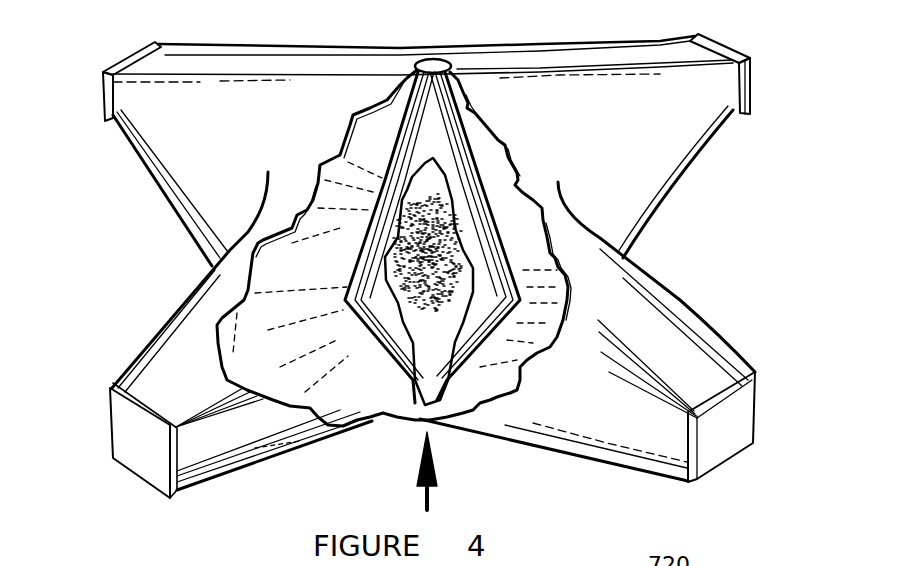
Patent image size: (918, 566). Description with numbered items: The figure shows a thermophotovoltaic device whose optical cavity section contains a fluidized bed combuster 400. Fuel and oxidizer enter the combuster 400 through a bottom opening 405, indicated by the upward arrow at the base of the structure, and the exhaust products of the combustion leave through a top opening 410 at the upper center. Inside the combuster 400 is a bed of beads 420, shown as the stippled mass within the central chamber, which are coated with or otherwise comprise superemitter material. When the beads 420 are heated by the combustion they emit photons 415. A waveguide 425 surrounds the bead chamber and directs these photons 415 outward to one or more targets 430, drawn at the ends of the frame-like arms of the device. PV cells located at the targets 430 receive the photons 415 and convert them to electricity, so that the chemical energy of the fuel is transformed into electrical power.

The fluidized bed combuster 400 is at (138, 183).
The bottom opening 405 is at (431, 497).
The top opening 410 is at (434, 59).
The photons 415 is at (263, 330).
The beads 420 is at (445, 220).
The waveguide 425 is at (663, 337).
The targets 430 is at (737, 410).